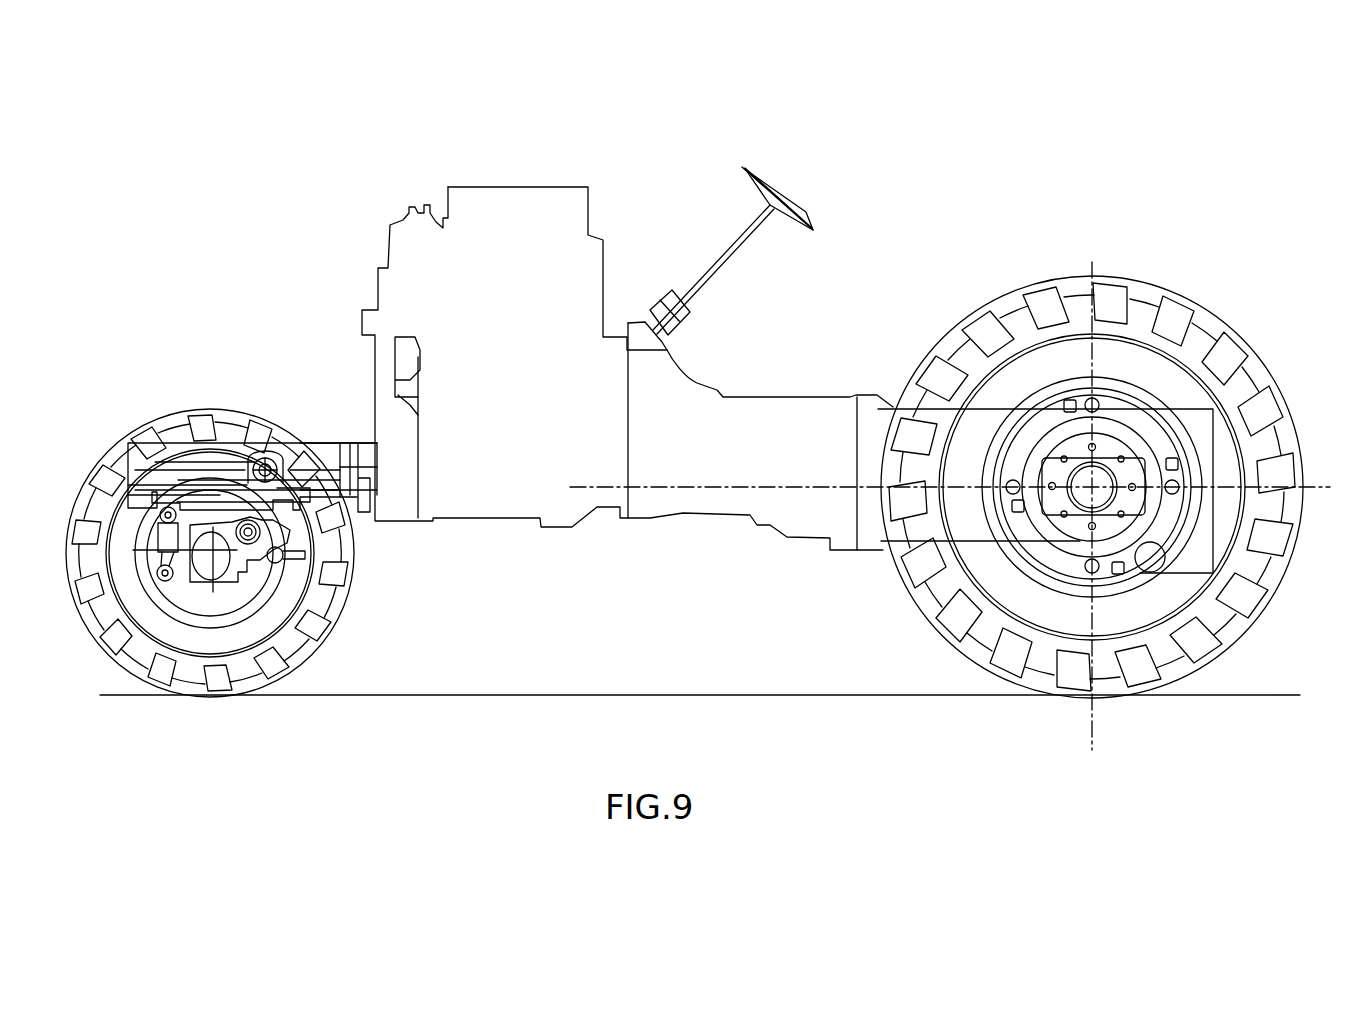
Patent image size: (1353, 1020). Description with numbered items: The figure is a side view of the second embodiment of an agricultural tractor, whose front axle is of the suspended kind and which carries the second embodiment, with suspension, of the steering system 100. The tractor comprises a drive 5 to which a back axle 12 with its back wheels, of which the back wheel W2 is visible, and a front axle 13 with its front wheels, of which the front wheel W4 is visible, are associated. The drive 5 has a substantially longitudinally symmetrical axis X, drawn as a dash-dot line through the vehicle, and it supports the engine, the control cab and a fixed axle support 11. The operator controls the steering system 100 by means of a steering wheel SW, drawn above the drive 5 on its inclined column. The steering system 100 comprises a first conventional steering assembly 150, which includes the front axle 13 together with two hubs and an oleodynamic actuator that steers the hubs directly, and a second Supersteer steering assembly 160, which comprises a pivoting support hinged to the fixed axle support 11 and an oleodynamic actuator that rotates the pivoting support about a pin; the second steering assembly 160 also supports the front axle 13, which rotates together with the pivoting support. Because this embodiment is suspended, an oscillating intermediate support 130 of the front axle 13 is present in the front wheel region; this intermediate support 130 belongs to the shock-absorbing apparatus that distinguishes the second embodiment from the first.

The drive 5 is at (783, 413).
The fixed axle support 11 is at (320, 462).
The back axle 12 is at (1105, 495).
The front axle 13 is at (233, 527).
The steering system 100 is at (241, 516).
The oscillating intermediate support 130 is at (283, 528).
The first steering assembly 150 is at (131, 420).
The second steering assembly 160 is at (203, 508).
The steering wheel SW is at (760, 178).
The back wheel W2 is at (1215, 620).
The front wheel W4 is at (330, 612).
The longitudinally symmetrical axis X is at (660, 487).